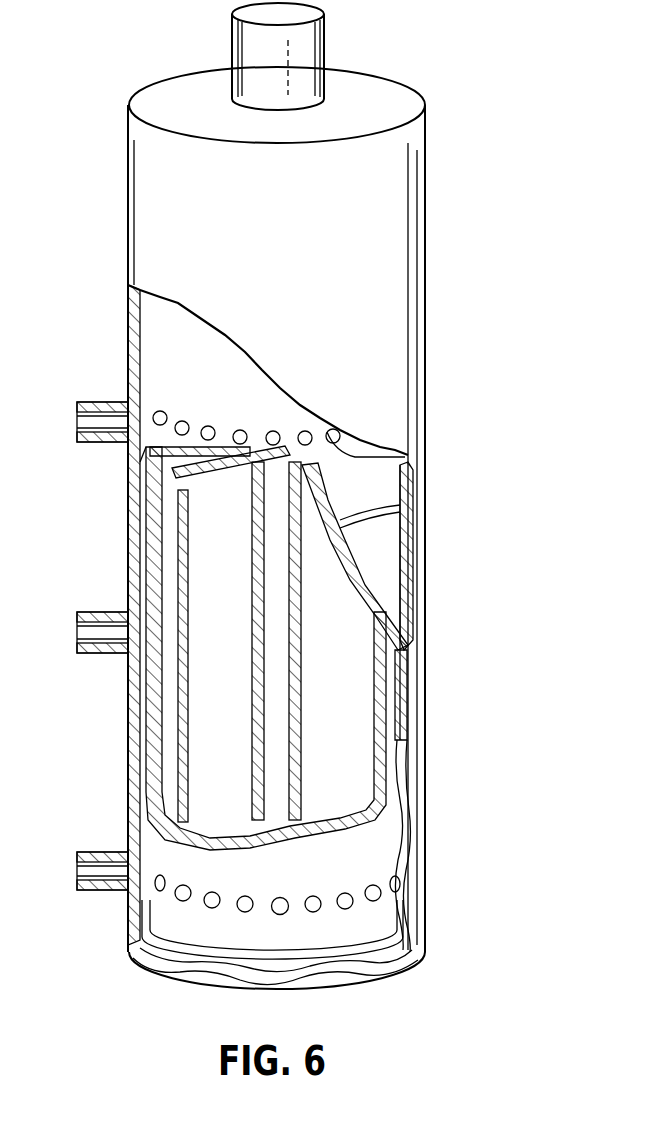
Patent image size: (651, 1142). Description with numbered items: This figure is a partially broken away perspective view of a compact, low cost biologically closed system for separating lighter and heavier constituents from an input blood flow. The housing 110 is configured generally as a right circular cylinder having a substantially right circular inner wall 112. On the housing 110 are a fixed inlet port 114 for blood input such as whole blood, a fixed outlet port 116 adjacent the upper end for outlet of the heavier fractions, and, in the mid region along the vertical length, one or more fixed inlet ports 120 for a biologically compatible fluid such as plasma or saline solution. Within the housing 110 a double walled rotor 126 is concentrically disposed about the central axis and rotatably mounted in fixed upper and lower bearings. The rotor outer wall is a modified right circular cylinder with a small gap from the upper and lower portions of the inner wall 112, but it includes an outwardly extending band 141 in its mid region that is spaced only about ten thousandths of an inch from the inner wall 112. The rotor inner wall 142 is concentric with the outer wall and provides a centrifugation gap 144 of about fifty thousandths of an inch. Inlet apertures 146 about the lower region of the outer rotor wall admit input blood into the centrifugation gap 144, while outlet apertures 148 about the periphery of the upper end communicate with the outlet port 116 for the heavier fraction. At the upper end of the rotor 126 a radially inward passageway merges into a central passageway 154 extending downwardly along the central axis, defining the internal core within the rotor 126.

The housing 110 is at (436, 356).
The inner wall 112 is at (136, 812).
The fixed inlet port 114 is at (100, 890).
The fixed outlet port 116 is at (105, 402).
The fixed inlet port 120 is at (90, 612).
The double walled rotor 126 is at (403, 837).
The outwardly extending band 141 is at (390, 563).
The rotor inner wall 142 is at (178, 523).
The centrifugation gap 144 is at (172, 733).
The inlet apertures 146 is at (155, 887).
The outlet apertures 148 is at (380, 455).
The central passageway 154 is at (282, 663).